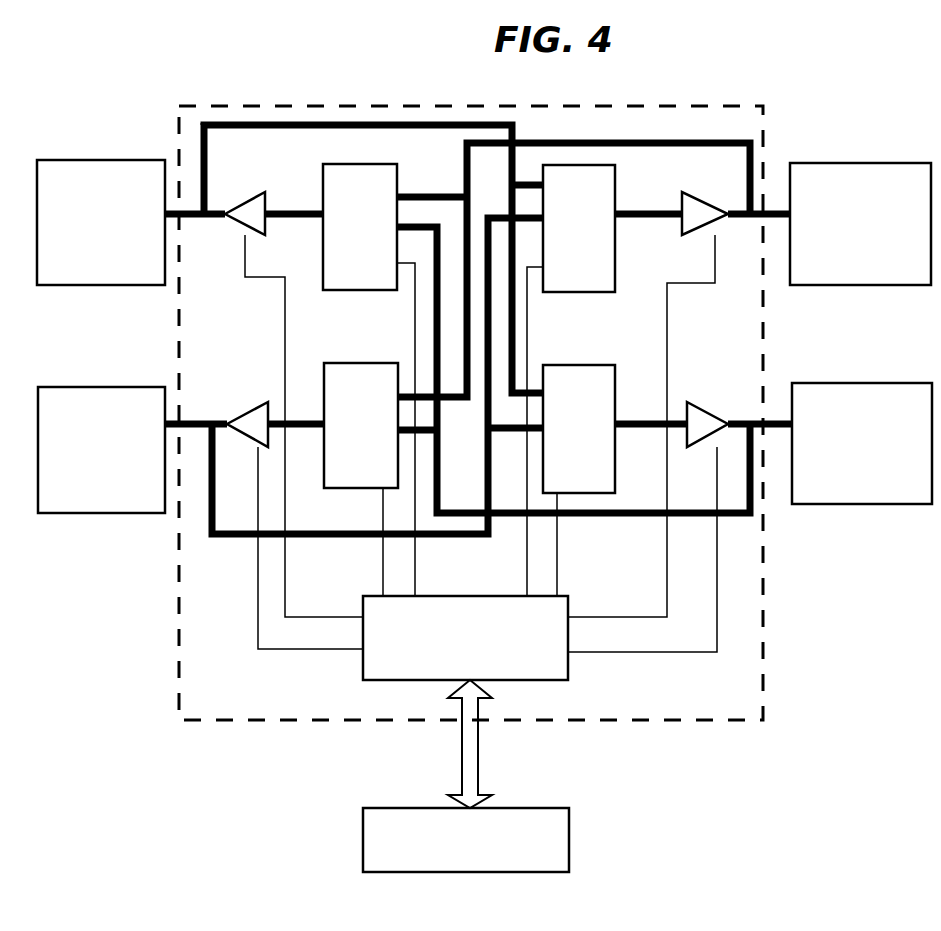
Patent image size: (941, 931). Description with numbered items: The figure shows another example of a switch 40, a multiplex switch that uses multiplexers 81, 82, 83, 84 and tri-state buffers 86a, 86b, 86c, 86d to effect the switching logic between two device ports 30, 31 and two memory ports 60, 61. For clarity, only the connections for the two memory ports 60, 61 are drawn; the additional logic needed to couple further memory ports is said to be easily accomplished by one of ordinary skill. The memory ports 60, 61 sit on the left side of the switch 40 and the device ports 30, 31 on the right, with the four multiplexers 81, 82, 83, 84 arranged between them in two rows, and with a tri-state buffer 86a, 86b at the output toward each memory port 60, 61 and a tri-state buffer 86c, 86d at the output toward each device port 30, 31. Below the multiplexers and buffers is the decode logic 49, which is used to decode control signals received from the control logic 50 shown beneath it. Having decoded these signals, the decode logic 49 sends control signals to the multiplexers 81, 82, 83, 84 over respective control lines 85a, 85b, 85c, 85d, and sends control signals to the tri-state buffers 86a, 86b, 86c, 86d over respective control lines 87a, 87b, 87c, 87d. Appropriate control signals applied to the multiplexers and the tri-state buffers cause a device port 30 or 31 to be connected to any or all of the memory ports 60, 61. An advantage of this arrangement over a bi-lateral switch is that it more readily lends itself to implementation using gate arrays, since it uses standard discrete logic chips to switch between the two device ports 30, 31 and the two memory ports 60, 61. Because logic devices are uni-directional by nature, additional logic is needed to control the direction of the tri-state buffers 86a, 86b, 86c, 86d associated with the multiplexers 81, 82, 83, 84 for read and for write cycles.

The switch 40 is at (682, 104).
The memory port 60 is at (104, 165).
The memory port 61 is at (107, 390).
The device port 30 is at (868, 168).
The device port 31 is at (872, 388).
The multiplexer 81 is at (397, 180).
The multiplexer 82 is at (357, 368).
The multiplexer 83 is at (602, 178).
The multiplexer 84 is at (580, 372).
The tri-state buffer 86a is at (245, 195).
The tri-state buffer 86b is at (247, 417).
The tri-state buffer 86c is at (693, 200).
The tri-state buffer 86d is at (707, 400).
The control line 85a is at (382, 575).
The control line 85b is at (417, 577).
The control line 85c is at (527, 582).
The control line 85d is at (557, 563).
The control line 87a is at (310, 615).
The control line 87b is at (275, 653).
The control line 87c is at (603, 615).
The control line 87d is at (633, 653).
The decode logic 49 is at (552, 680).
The control logic 50 is at (571, 835).